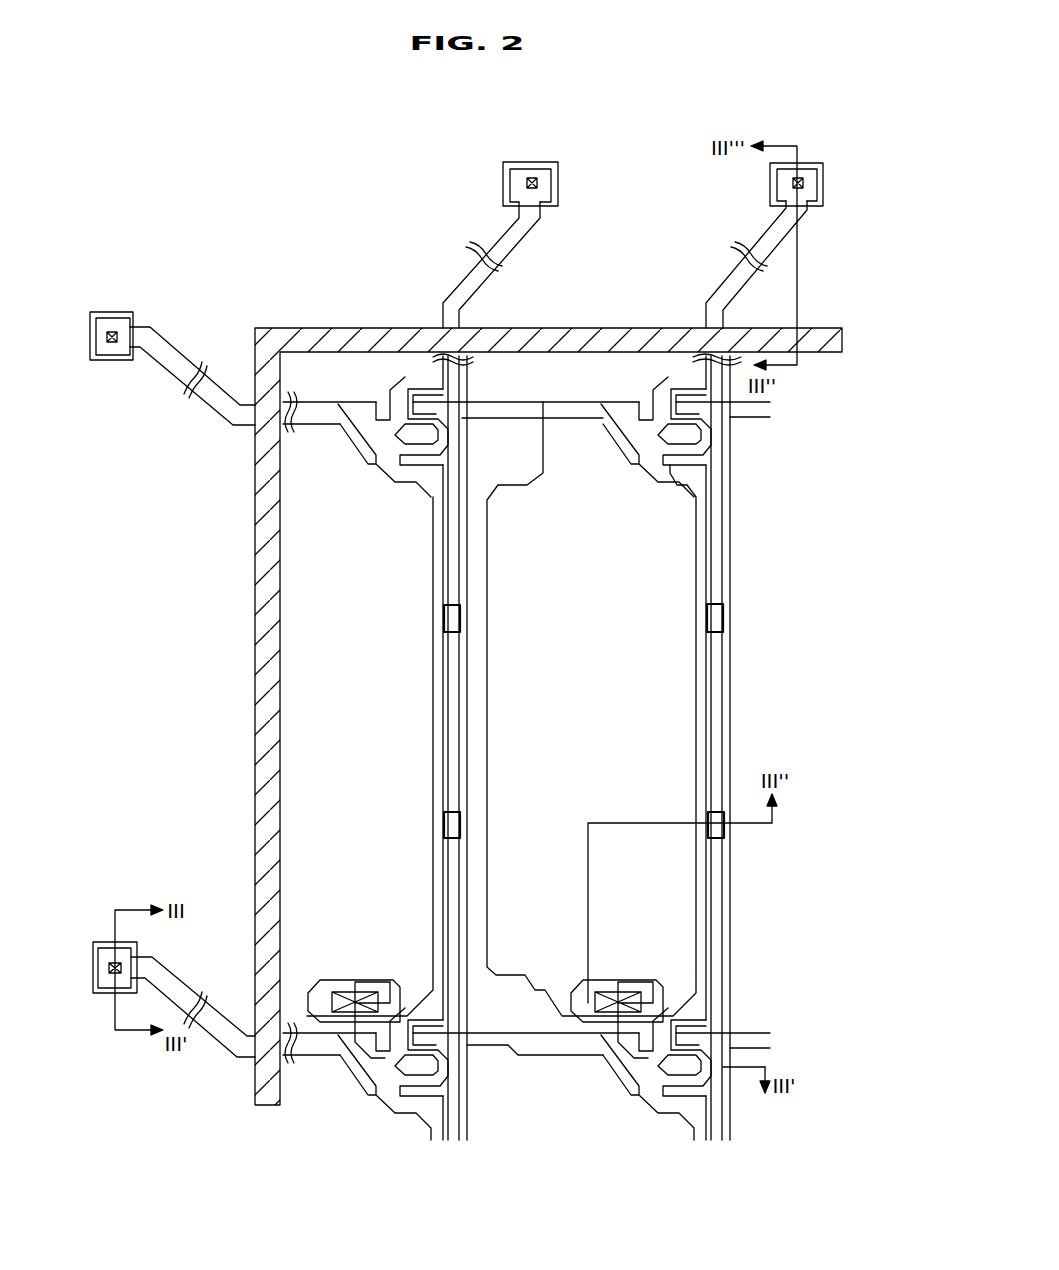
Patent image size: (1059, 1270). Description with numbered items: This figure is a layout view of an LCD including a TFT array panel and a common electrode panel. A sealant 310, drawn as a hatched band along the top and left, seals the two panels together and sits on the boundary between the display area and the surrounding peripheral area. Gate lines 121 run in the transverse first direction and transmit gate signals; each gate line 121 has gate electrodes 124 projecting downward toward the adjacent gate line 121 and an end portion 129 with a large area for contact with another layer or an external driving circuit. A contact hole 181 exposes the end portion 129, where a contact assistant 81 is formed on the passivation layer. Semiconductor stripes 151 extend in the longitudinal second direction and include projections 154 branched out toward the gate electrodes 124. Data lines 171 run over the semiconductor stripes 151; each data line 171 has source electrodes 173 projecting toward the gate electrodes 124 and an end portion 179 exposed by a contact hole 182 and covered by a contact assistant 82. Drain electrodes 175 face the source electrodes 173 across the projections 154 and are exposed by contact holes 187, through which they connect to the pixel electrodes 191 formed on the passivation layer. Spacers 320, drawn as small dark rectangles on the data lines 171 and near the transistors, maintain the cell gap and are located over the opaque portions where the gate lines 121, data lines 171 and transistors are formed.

The gate line 121 is at (564, 1057).
The gate electrode 124 is at (737, 1072).
The end portion of gate line 129 is at (103, 314).
The contact assistant 81 is at (103, 362).
The contact hole 181 is at (117, 346).
The semiconductor stripe 151 is at (715, 640).
The projection of semiconductor stripe 154 is at (660, 1103).
The data line 171 is at (711, 567).
The source electrode 173 is at (688, 1105).
The drain electrode 175 is at (638, 1100).
The end portion of data line 179 is at (770, 200).
The contact assistant 82 is at (823, 200).
The contact hole 182 is at (800, 177).
The contact hole 187 is at (633, 992).
The pixel electrode 191 is at (700, 655).
The sealant 310 is at (601, 328).
The spacer 320 is at (460, 615).